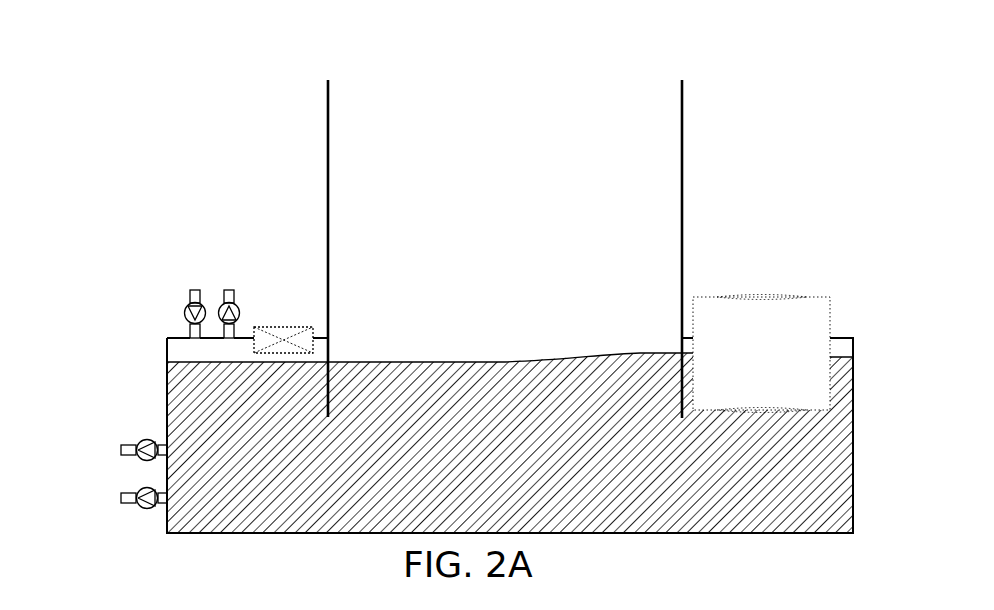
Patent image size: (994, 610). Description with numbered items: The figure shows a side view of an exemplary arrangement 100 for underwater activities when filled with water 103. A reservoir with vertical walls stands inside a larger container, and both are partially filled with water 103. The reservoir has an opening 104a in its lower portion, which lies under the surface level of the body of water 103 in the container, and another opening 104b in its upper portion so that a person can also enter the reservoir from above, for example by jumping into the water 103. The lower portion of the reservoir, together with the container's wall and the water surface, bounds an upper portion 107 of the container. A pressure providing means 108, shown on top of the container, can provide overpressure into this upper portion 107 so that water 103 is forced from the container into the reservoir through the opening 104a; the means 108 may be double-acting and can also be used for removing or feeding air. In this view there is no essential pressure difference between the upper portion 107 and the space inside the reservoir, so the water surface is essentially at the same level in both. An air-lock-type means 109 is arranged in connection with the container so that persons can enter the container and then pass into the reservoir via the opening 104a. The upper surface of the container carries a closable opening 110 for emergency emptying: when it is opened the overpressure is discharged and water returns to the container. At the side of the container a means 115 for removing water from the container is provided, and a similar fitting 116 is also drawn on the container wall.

The arrangement for underwater activities 100 is at (444, 106).
The water 103 is at (437, 358).
The opening 104a is at (657, 434).
The another opening 104b is at (648, 78).
The upper portion of the container 107 is at (176, 347).
The pressure providing means 108 is at (196, 290).
The air-lock-type means 109 is at (786, 296).
The closable opening 110 is at (283, 326).
The means for removing water from the container 115 is at (139, 438).
The outlet valve 116 is at (139, 509).